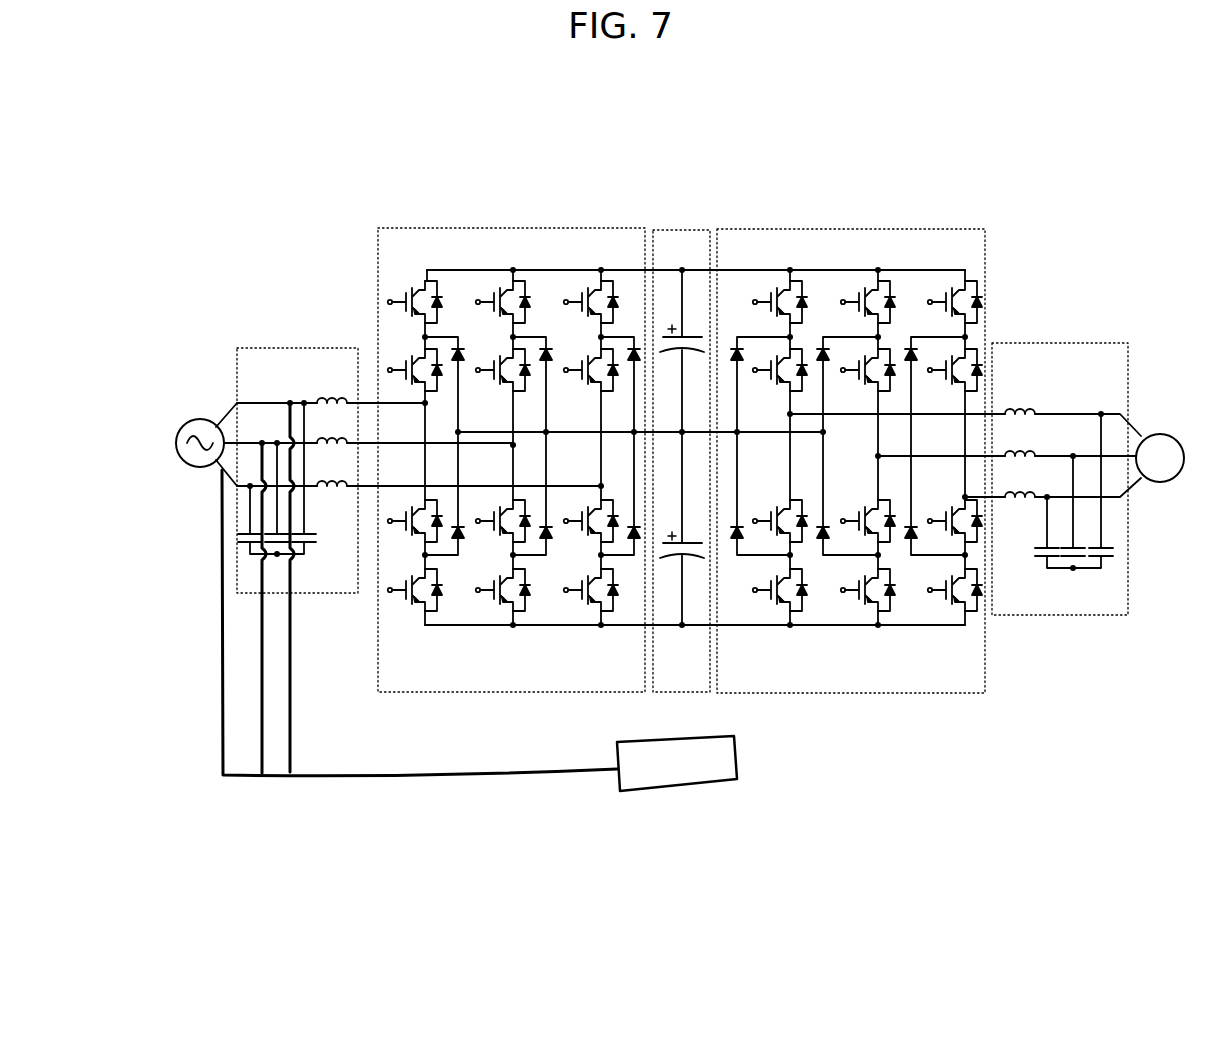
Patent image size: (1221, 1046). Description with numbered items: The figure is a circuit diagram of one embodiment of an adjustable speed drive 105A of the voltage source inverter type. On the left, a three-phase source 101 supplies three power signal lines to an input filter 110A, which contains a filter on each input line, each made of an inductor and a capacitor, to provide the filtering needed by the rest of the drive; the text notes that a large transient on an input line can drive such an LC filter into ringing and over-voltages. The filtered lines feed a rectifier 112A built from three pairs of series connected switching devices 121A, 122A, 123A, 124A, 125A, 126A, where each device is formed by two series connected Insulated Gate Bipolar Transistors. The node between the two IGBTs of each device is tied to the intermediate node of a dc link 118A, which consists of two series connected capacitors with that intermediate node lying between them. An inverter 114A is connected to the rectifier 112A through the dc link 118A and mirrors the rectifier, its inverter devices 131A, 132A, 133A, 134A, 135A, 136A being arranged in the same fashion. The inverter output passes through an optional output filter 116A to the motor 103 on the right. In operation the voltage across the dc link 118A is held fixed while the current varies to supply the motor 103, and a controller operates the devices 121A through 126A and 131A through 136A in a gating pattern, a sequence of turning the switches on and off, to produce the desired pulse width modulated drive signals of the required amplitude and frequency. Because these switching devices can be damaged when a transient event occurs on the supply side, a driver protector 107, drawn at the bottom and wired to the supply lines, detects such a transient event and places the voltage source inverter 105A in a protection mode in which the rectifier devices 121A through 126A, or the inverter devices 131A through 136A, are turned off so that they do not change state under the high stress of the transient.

The source 101 is at (182, 462).
The motor 103 is at (1160, 434).
The adjustable speed drive 105A is at (991, 185).
The driver protector 107 is at (707, 787).
The input filter 110A is at (265, 347).
The rectifier 112A is at (467, 228).
The inverter 114A is at (848, 228).
The output filter 116A is at (1045, 343).
The dc link 118A is at (682, 226).
The switching device 121A is at (463, 289).
The switching device 122A is at (461, 599).
The switching device 123A is at (547, 288).
The switching device 124A is at (534, 636).
The switching device 125A is at (633, 284).
The switching device 126A is at (626, 606).
The inverter device 131A is at (745, 294).
The inverter device 132A is at (740, 620).
The inverter device 133A is at (834, 291).
The inverter device 134A is at (835, 620).
The inverter device 135A is at (927, 292).
The inverter device 136A is at (926, 620).